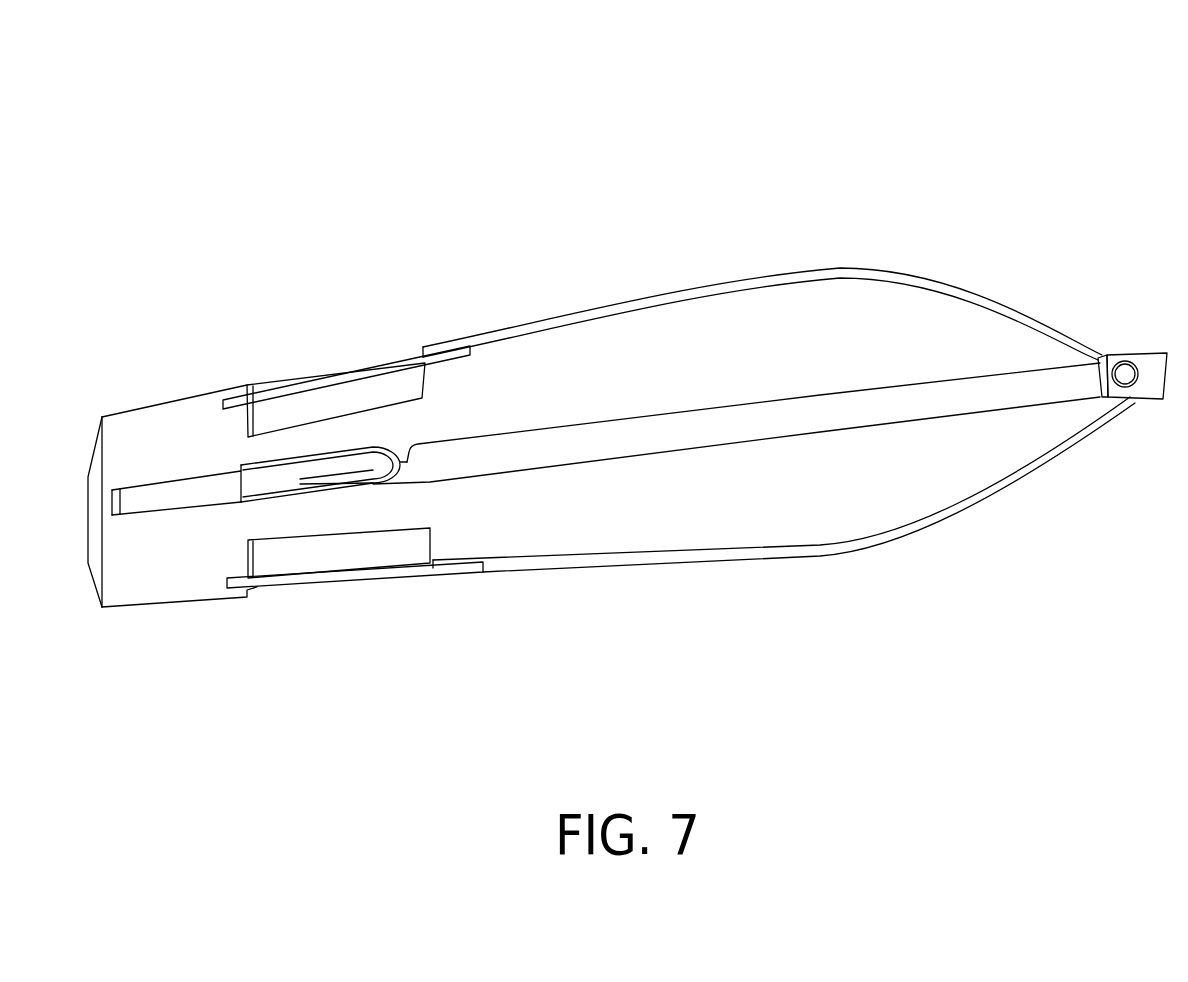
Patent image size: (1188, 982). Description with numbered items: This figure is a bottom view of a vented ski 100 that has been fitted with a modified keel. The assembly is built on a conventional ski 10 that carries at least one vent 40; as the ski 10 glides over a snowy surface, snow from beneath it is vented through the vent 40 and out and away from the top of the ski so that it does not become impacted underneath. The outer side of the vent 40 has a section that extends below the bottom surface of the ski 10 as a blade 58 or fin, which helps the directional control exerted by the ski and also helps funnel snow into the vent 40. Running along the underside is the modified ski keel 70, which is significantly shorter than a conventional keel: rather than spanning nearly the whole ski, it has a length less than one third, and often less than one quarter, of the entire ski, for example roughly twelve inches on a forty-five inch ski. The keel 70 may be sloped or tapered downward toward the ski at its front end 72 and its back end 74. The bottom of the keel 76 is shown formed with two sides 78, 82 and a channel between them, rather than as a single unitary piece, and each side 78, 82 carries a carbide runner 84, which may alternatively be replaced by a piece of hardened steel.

The vented ski 100 is at (127, 148).
The ski 10 is at (883, 312).
The vent 40 is at (313, 402).
The blade 58 is at (447, 343).
The modified ski keel 70 is at (253, 483).
The front end 72 is at (415, 455).
The back end 74 is at (238, 491).
The bottom of the keel 76 is at (330, 473).
The side 78 is at (277, 463).
The side 82 is at (358, 487).
The carbide runner 84 is at (295, 488).